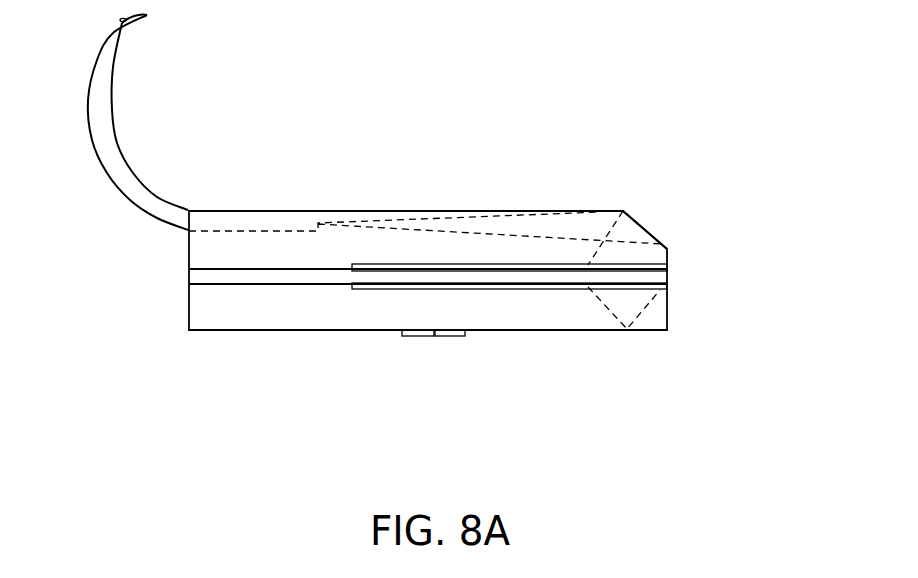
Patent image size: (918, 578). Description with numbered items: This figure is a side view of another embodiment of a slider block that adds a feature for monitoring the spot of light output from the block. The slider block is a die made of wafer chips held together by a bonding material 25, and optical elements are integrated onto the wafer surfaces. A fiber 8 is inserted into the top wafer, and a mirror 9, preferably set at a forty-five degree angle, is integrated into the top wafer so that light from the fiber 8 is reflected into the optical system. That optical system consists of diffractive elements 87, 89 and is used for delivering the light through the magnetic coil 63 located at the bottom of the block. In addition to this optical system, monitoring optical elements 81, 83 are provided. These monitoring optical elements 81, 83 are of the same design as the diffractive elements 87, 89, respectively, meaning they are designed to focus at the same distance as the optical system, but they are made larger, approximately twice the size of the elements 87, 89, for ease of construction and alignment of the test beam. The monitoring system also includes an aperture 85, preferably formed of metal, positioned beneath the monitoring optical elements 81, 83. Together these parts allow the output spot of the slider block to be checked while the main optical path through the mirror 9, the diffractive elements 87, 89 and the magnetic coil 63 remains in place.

The fiber 8 is at (113, 122).
The mirror 9 is at (648, 223).
The bonding material 25 is at (190, 276).
The magnetic coil 63 is at (640, 332).
The monitoring optical element 81 is at (365, 264).
The monitoring optical element 83 is at (420, 289).
The aperture 85 is at (443, 335).
The diffractive element 87 is at (647, 265).
The diffractive element 89 is at (668, 302).